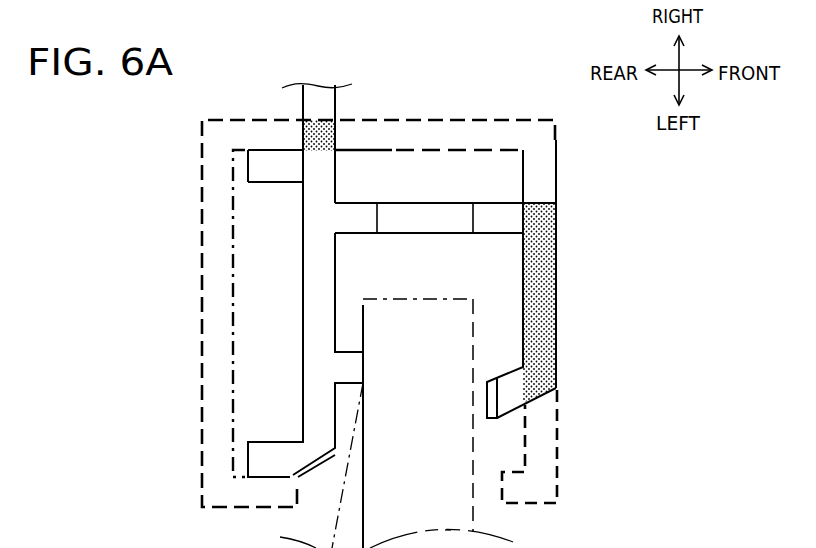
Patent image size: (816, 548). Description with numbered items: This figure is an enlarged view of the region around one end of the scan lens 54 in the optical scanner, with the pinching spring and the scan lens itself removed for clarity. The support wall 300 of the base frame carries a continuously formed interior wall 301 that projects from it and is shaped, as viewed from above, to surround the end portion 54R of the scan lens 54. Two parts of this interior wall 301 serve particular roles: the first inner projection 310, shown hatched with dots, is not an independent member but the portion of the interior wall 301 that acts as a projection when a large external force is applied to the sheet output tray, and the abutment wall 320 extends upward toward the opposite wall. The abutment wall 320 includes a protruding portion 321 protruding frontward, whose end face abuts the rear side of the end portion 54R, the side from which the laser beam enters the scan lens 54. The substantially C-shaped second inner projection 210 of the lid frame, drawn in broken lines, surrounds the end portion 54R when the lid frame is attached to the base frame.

The support wall 300 is at (131, 511).
The second inner projection 210 is at (560, 170).
The interior wall 301 is at (434, 198).
The first inner projection 310 is at (330, 124).
The abutment wall 320 is at (298, 233).
The protruding portion 321 is at (350, 369).
The end portion 54R is at (448, 318).
The scan lens 54 is at (476, 441).